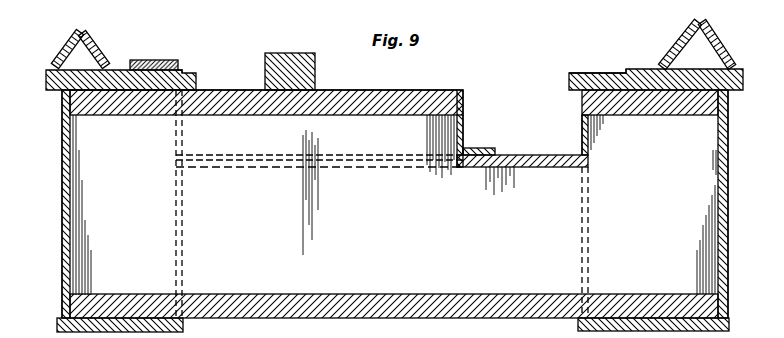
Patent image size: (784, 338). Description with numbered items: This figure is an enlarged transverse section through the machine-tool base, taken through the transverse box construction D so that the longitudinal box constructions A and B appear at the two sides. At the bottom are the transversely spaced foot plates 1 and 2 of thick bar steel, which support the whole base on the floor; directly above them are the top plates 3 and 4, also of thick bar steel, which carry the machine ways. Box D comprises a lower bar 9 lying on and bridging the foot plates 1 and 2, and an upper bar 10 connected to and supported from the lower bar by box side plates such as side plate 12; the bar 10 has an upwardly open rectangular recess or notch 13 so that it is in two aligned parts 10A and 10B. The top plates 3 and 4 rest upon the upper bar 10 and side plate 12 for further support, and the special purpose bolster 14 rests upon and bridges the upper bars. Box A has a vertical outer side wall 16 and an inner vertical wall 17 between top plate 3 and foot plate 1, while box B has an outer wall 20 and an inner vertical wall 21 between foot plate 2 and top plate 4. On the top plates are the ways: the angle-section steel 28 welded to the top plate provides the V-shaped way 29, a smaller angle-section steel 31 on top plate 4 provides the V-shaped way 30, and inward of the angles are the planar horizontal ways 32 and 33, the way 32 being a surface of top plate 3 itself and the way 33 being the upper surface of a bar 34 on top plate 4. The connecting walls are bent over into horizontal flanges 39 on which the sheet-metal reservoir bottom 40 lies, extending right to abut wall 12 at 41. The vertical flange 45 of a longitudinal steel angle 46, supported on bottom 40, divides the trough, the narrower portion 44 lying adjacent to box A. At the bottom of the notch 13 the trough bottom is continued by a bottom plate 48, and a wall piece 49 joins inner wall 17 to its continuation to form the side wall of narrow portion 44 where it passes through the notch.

The foot plate 1 is at (730, 318).
The foot plate 2 is at (57, 322).
The top plate 3 is at (743, 79).
The top plate 4 is at (46, 78).
The lower bar 9 is at (433, 317).
The upper bar 10 is at (380, 113).
The upper bar part 10A is at (371, 92).
The upper bar part 10B is at (720, 101).
The box side plate 12 is at (385, 228).
The rectangular recess or notch 13 is at (455, 126).
The special purpose bolster 14 is at (292, 60).
The vertical outer side wall 16 is at (728, 210).
The inner vertical wall 17 is at (583, 224).
The vertical outer wall 20 is at (62, 198).
The inner vertical wall 21 is at (183, 224).
The angle-section steel 28 is at (722, 38).
The V-shaped way 29 is at (690, 21).
The V-shaped way 30 is at (84, 30).
The angle-section steel 31 is at (93, 50).
The planar horizontal way 32 is at (590, 72).
The planar horizontal way 33 is at (152, 60).
The bar 34 is at (178, 66).
The horizontal flange 39 is at (262, 168).
The reservoir bottom 40 is at (258, 153).
The abutment 41 is at (300, 153).
The narrower reservoir portion 44 is at (522, 128).
The vertical flange 45 is at (463, 98).
The longitudinal steel angle 46 is at (472, 151).
The bottom plate 48 is at (549, 156).
The wall piece 49 is at (615, 132).
The longitudinal box construction A is at (728, 156).
The longitudinal box construction B is at (62, 148).